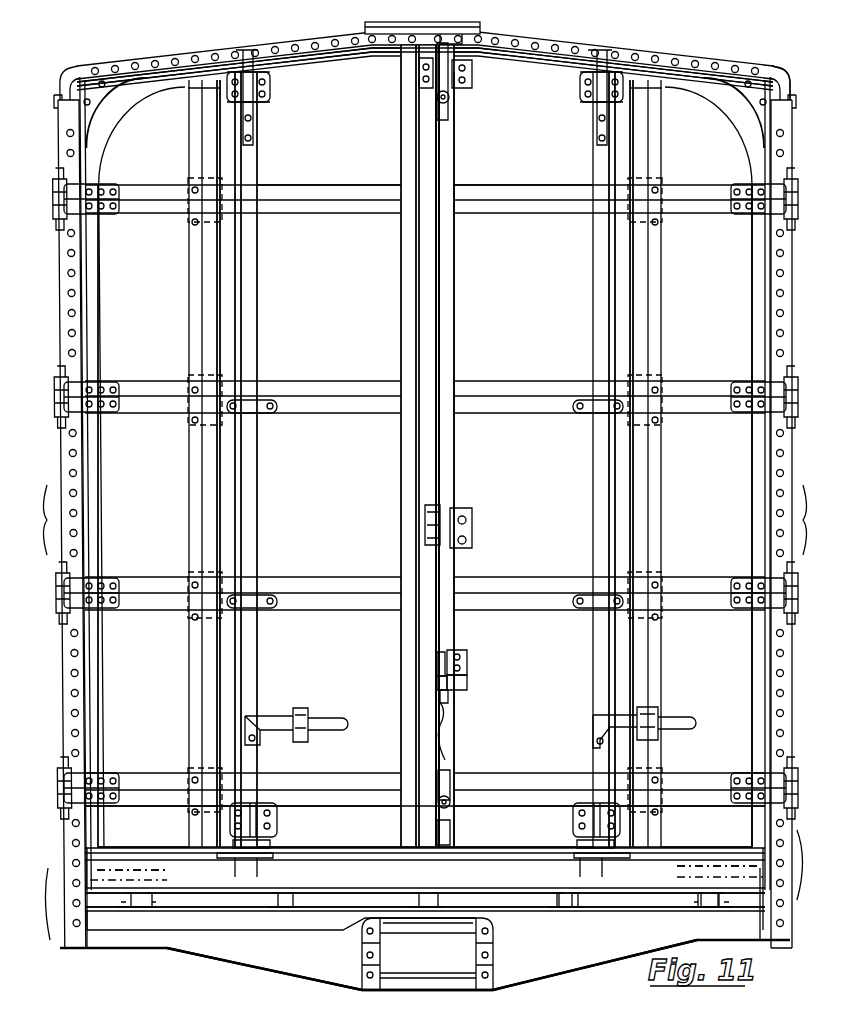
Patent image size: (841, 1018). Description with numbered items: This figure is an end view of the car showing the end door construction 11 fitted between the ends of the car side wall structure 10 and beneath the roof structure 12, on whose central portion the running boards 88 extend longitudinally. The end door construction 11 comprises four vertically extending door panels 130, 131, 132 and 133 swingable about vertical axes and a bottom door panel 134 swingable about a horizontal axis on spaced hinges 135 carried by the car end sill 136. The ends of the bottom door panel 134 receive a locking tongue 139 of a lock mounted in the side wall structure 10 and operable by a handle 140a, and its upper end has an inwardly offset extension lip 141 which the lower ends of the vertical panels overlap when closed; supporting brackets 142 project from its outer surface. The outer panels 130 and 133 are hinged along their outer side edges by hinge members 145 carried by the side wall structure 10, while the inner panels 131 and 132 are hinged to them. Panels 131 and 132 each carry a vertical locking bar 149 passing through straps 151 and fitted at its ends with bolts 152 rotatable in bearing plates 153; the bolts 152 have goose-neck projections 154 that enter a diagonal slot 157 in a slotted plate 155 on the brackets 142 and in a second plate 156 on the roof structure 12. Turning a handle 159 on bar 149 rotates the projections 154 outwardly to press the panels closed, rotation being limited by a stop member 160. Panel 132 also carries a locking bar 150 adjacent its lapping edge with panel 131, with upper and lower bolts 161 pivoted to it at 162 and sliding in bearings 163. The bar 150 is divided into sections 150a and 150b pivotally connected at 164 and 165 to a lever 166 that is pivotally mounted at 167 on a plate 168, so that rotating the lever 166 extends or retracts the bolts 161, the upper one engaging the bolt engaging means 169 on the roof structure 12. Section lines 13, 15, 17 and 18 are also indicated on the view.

The car side wall structure 10 is at (420, 733).
The end door construction 11 is at (698, 106).
The roof structure 12 is at (298, 52).
The section line 13 is at (43, 840).
The section line 15 is at (200, 755).
The section line 17 is at (555, 765).
The section line 18 / center sill box 18 is at (428, 765).
The running boards 88 is at (458, 22).
The door panel 130 is at (160, 478).
The door panel 131 is at (337, 475).
The door panel 132 is at (537, 475).
The door panel 133 is at (720, 470).
The bottom door panel 134 is at (338, 912).
The hinges 135 is at (140, 908).
The car end sill 136 is at (172, 911).
The locking tongue 139 is at (125, 845).
The handle 140a is at (427, 869).
The offset extension lip 141 is at (268, 1003).
The supporting brackets 142 is at (265, 858).
The hinge members 145 is at (95, 184).
The locking bar 149 is at (262, 286).
The locking bar 150 is at (447, 436).
The upper section of locking bar 150a is at (454, 640).
The lower section of locking bar 150b is at (454, 776).
The straps 151 is at (262, 395).
The bolts 152 is at (250, 106).
The bearing plates 153 is at (276, 90).
The goose-neck projections 154 is at (238, 50).
The slotted plate 155 is at (240, 908).
The second plate 156 is at (213, 50).
The diagonal slot 157 is at (252, 56).
The handle 159 is at (283, 705).
The stop member 160 is at (305, 707).
The bolts 161 is at (419, 76).
The pivot 162 is at (448, 103).
The bearings 163 is at (420, 100).
The pivotal connection 164 is at (460, 650).
The pivotal connection 165 is at (468, 682).
The lever 166 is at (450, 694).
The pivotal mounting 167 is at (437, 660).
The plate 168 is at (470, 665).
The upper bolt engaging means 169 is at (422, 22).